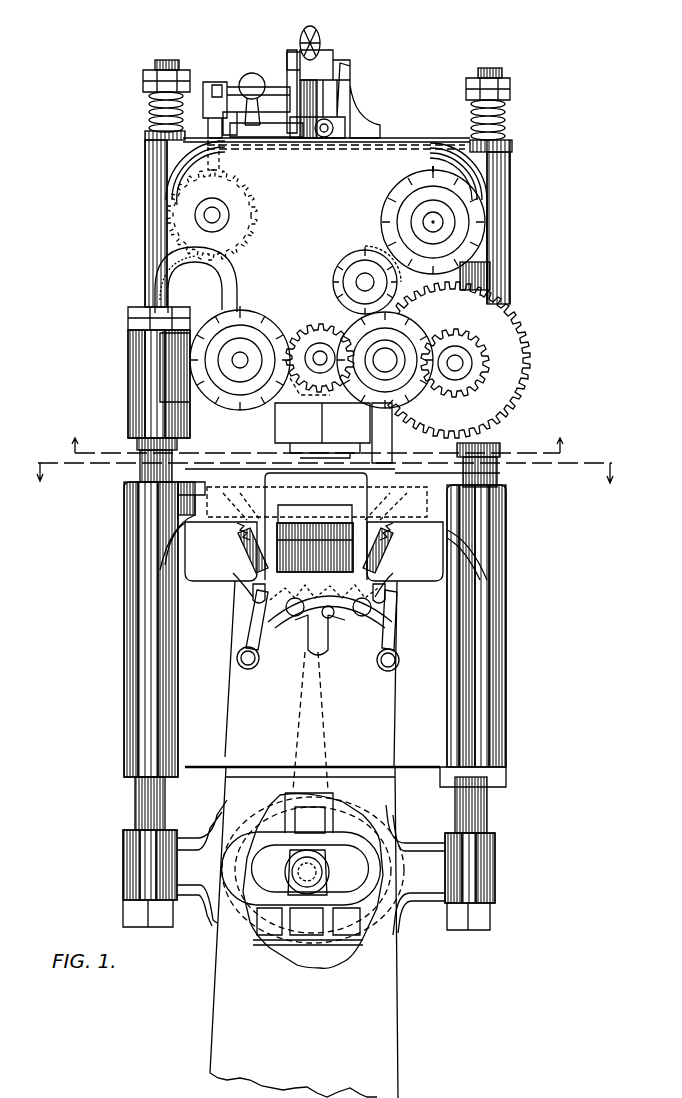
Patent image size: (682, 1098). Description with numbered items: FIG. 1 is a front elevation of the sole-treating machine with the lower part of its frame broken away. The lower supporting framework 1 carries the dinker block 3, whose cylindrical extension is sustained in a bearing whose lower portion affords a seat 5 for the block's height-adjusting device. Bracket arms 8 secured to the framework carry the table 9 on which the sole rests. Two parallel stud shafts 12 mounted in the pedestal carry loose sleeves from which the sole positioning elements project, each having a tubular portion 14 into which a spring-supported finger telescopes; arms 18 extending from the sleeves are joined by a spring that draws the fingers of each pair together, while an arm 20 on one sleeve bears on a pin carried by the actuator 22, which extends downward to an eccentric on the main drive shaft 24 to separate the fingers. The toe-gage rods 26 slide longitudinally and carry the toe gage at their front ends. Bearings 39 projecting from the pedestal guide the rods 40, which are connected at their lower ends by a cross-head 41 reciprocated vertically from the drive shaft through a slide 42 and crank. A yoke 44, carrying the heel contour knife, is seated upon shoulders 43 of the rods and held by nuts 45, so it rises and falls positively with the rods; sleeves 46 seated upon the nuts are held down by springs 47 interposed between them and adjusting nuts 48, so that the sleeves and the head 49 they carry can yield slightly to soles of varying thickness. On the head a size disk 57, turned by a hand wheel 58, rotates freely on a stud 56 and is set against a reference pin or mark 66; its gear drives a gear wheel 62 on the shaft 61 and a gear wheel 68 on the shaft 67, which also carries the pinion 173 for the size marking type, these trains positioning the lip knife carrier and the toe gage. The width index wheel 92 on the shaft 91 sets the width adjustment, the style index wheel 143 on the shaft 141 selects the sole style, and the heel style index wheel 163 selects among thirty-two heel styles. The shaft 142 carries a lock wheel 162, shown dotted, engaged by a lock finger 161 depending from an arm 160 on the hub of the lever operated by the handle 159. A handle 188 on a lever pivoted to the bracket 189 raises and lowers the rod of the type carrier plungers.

The lower supporting framework 1 is at (304, 932).
The dinker block 3 is at (313, 449).
The seat 5 is at (320, 474).
The bracket arms 8 is at (185, 512).
The table 9 is at (262, 488).
The stud shafts 12 is at (321, 625).
The tubular portion 14 is at (250, 548).
The arms 18 is at (254, 590).
The arm 20 is at (320, 652).
The actuator 22 is at (322, 722).
The main drive shaft 24 is at (323, 865).
The toe-gage rods 26 is at (240, 658).
The bearings 39 is at (130, 724).
The rods 40 is at (140, 470).
The cross-head 41 is at (205, 930).
The slide 42 is at (287, 855).
The shoulders 43 is at (137, 440).
The yoke 44 is at (168, 355).
The nuts 45 is at (128, 316).
The sleeves 46 is at (158, 212).
The springs 47 is at (150, 108).
The adjusting nuts 48 is at (147, 80).
The head 49 is at (392, 160).
The stud 56 is at (403, 343).
The size disk 57 is at (410, 370).
The hand wheel 58 is at (376, 382).
The shaft 61 is at (320, 352).
The gear wheel 62 is at (300, 335).
The reference pin or mark 66 is at (360, 398).
The shaft 67 is at (456, 362).
The gear wheel 68 is at (466, 386).
The shaft 91 is at (338, 272).
The index wheel 92 is at (338, 290).
The shaft 141 is at (428, 222).
The shaft 142 is at (218, 215).
The index wheel 143 is at (466, 214).
The operating handle 159 is at (254, 74).
The arm 160 is at (214, 84).
The lock finger 161 is at (221, 160).
The lock wheel 162 is at (178, 196).
The index wheel 163 is at (206, 376).
The pinion or gear wheel 173 is at (524, 374).
The handle 188 is at (312, 44).
The bracket 189 is at (291, 92).